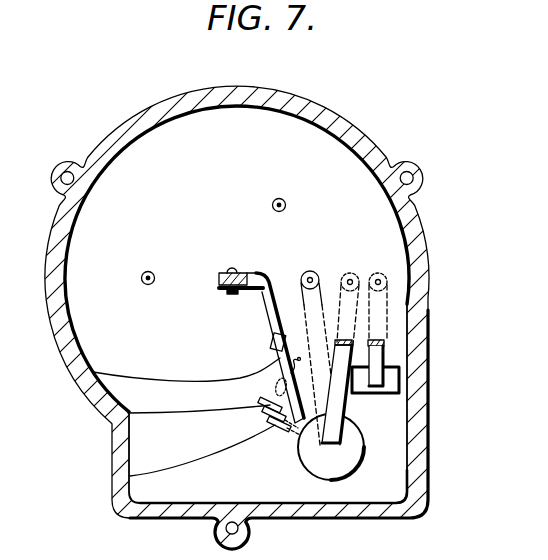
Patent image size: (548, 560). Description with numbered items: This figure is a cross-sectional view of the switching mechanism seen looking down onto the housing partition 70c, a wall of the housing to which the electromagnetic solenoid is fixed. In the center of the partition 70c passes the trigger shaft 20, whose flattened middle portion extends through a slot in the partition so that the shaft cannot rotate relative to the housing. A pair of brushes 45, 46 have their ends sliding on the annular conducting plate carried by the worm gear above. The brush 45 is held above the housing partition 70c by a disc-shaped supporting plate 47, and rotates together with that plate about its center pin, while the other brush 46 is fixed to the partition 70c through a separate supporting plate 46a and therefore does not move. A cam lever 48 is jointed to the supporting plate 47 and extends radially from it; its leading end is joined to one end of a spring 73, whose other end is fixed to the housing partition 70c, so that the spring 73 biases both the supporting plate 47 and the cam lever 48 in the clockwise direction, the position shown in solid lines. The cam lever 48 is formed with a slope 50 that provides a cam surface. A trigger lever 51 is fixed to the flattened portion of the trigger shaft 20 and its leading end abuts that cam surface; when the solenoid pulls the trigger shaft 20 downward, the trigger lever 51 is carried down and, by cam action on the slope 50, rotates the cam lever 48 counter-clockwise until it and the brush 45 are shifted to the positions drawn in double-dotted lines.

The trigger shaft 20 is at (227, 270).
The brush 45 is at (318, 281).
The brush 46 is at (373, 314).
The supporting plate 46a is at (392, 379).
The supporting plate 47 is at (351, 457).
The cam lever 48 is at (128, 413).
The slope 50 is at (130, 476).
The trigger lever 51 is at (93, 372).
The housing partition 70c is at (389, 490).
The spring 73 is at (294, 372).